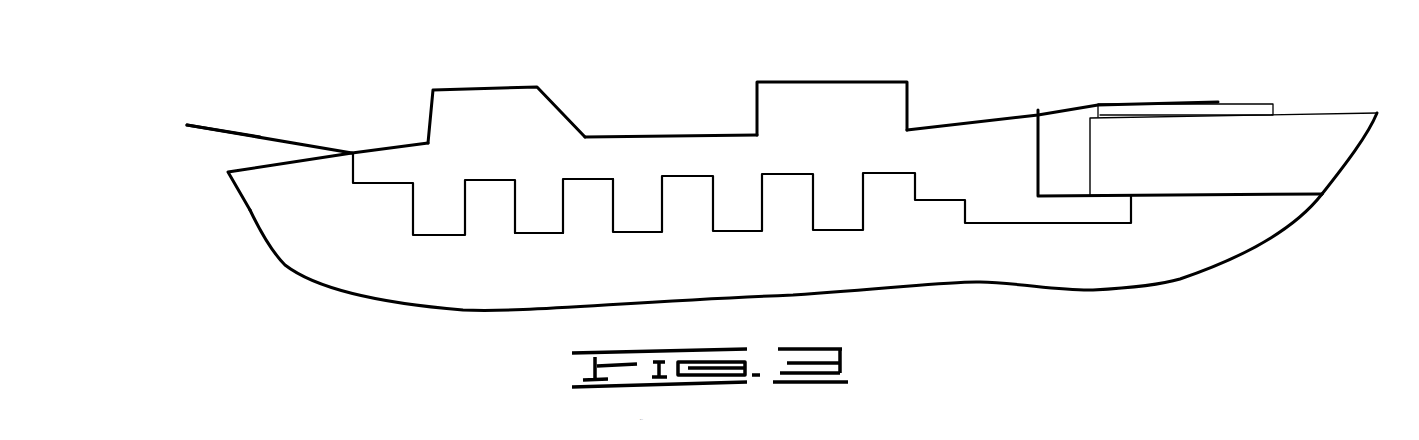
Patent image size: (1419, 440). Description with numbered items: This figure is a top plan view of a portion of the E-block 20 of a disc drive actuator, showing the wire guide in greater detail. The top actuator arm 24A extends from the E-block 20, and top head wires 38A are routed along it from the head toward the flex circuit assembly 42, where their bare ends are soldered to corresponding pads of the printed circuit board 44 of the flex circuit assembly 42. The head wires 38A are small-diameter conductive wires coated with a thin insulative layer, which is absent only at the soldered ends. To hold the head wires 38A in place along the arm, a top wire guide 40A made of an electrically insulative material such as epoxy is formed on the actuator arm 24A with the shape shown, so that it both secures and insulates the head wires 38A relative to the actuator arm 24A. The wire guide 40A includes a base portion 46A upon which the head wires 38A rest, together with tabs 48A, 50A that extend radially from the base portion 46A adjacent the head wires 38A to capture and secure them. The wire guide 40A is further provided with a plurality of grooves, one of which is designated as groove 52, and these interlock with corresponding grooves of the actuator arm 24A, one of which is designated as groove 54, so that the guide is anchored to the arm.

The E-block 20 is at (488, 28).
The top actuator arm 24A is at (392, 272).
The top head wires 38A is at (258, 135).
The top wire guide 40A is at (665, 82).
The flex circuit assembly 42 is at (1275, 78).
The printed circuit board 44 is at (1162, 165).
The base portion 46A is at (623, 138).
The tab 48A is at (465, 88).
The tab 50A is at (837, 82).
The groove 52 is at (590, 180).
The groove 54 is at (530, 237).